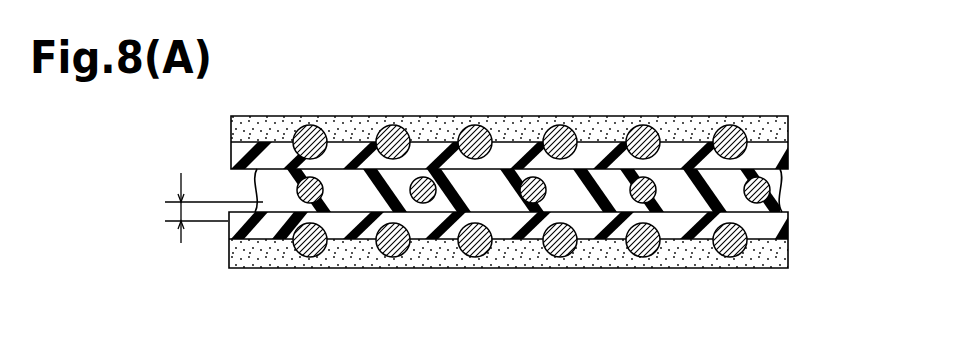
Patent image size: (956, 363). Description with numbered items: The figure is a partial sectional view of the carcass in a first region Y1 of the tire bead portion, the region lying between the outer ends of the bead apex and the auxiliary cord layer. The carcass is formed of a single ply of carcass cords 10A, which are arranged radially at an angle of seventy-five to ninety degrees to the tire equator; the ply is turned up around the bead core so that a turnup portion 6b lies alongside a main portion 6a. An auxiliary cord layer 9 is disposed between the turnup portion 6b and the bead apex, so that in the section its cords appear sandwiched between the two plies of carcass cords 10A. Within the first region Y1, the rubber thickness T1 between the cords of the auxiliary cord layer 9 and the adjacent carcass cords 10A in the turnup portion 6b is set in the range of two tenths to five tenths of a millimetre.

The first region Y1 is at (737, 111).
The main portion 6a is at (773, 128).
The turnup portion 6b is at (767, 255).
The auxiliary cord layer 9 is at (775, 183).
The carcass cords 10A is at (312, 242).
The rubber thickness T1 is at (182, 205).